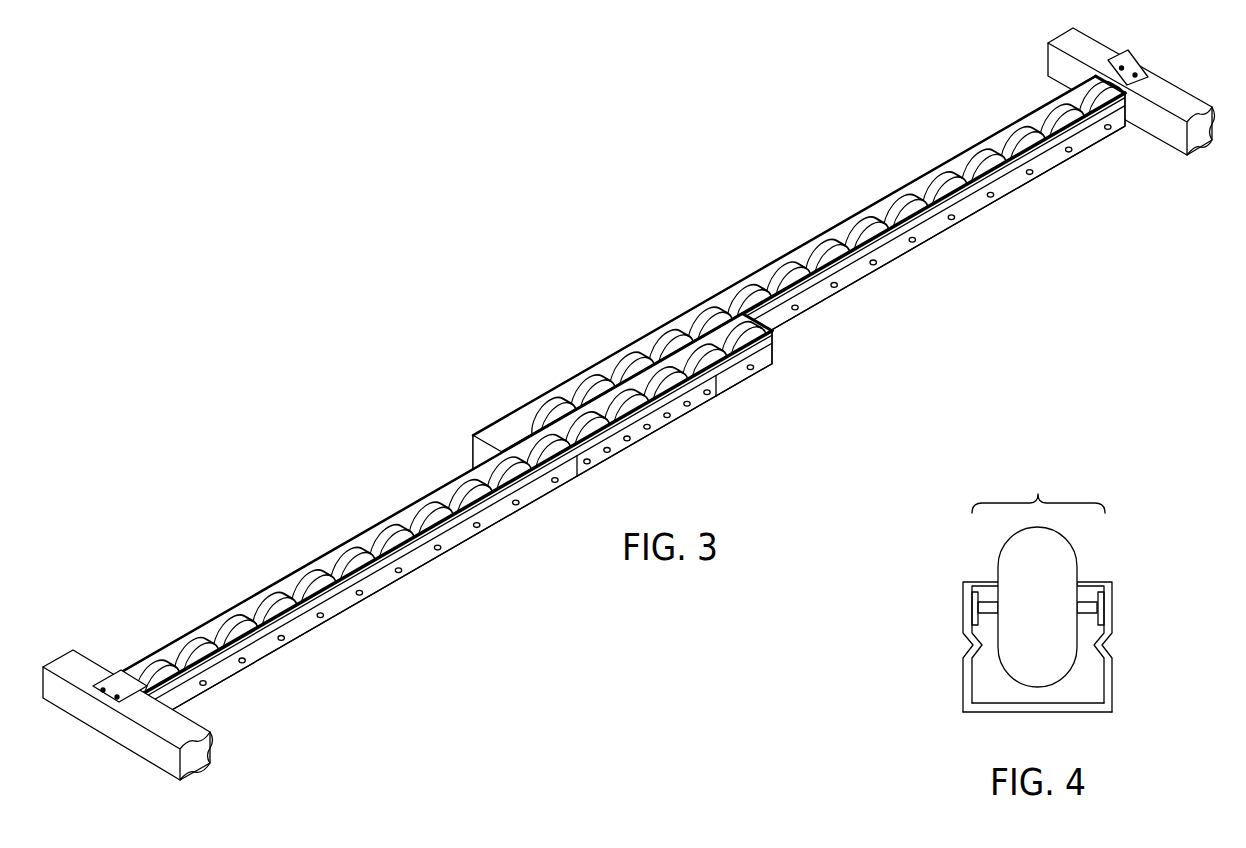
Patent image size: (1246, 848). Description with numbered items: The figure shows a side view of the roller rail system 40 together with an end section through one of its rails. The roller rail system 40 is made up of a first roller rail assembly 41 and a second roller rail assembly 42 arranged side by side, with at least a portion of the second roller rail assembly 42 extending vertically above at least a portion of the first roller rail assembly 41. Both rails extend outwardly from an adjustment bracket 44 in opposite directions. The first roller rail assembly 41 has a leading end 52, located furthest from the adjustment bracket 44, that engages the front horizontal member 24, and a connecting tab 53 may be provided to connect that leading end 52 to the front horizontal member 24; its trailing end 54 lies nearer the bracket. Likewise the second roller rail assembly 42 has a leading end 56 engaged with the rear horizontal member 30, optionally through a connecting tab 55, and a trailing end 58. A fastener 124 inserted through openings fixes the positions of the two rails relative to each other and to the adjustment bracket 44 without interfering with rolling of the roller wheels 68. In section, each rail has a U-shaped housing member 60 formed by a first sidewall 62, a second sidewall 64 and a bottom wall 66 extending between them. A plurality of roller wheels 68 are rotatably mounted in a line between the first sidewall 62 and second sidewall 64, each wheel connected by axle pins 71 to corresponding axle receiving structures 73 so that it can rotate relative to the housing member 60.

In FIG. 3, the front horizontal member 24 is at (138, 746).
In FIG. 3, the rear horizontal member 30 is at (1183, 100).
In FIG. 3, the roller rail system 40 is at (612, 405).
In FIG. 3, the first roller rail assembly 41 is at (463, 525).
In FIG. 4, the first roller rail assembly 41 is at (1061, 610).
In FIG. 3, the second roller rail assembly 42 is at (782, 277).
In FIG. 3, the adjustment bracket 44 is at (605, 478).
In FIG. 3, the leading end 52 is at (98, 687).
In FIG. 3, the connecting tab 53 is at (100, 694).
In FIG. 3, the trailing end 54 is at (773, 352).
In FIG. 3, the connecting tab 55 is at (1147, 51).
In FIG. 3, the leading end 56 is at (1119, 65).
In FIG. 3, the trailing end 58 is at (473, 432).
In FIG. 3, the fastener 124 is at (657, 430).
In FIG. 4, the U-shaped housing member 60 is at (1061, 664).
In FIG. 4, the first sidewall 62 is at (963, 684).
In FIG. 4, the second sidewall 64 is at (1112, 684).
In FIG. 4, the bottom wall 66 is at (1085, 713).
In FIG. 4, the roller wheels 68 is at (1008, 553).
In FIG. 4, the axle pins 71 is at (1000, 607).
In FIG. 4, the axle receiving structures 73 is at (972, 600).